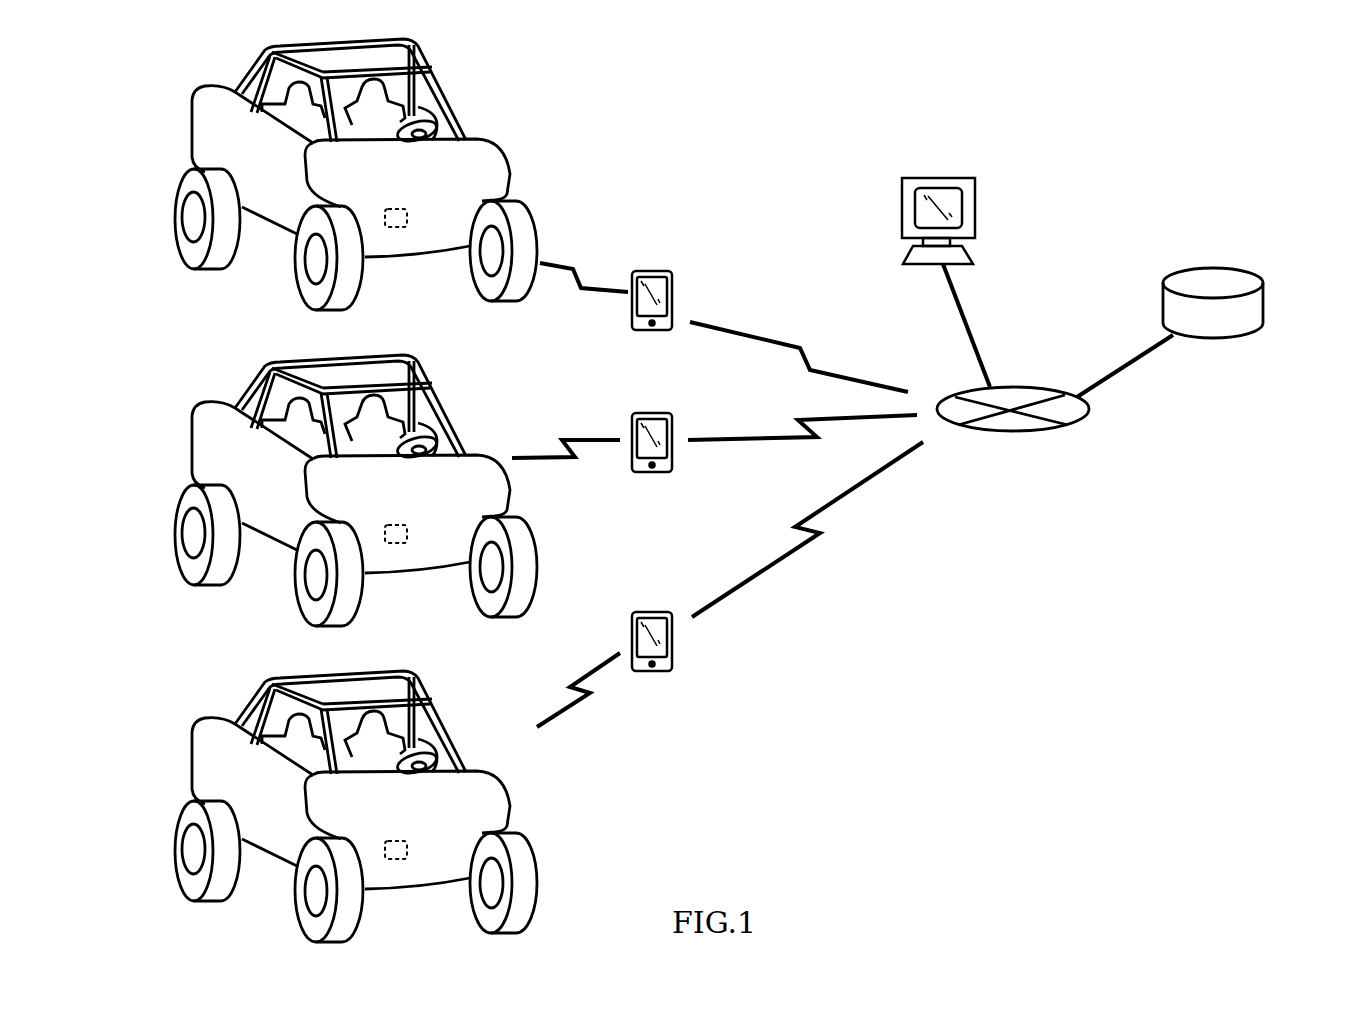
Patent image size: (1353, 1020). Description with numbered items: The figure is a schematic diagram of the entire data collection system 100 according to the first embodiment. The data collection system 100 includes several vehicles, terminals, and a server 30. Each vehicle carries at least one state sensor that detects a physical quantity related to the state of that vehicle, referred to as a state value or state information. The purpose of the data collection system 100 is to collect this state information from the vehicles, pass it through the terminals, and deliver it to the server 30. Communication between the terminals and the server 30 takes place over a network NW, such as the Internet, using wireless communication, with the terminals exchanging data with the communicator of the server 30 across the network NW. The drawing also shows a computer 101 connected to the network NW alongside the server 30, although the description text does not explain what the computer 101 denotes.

The server 30 is at (1255, 272).
The data collection system 100 is at (1186, 120).
The server computer 101 is at (958, 178).
The network NW is at (945, 398).